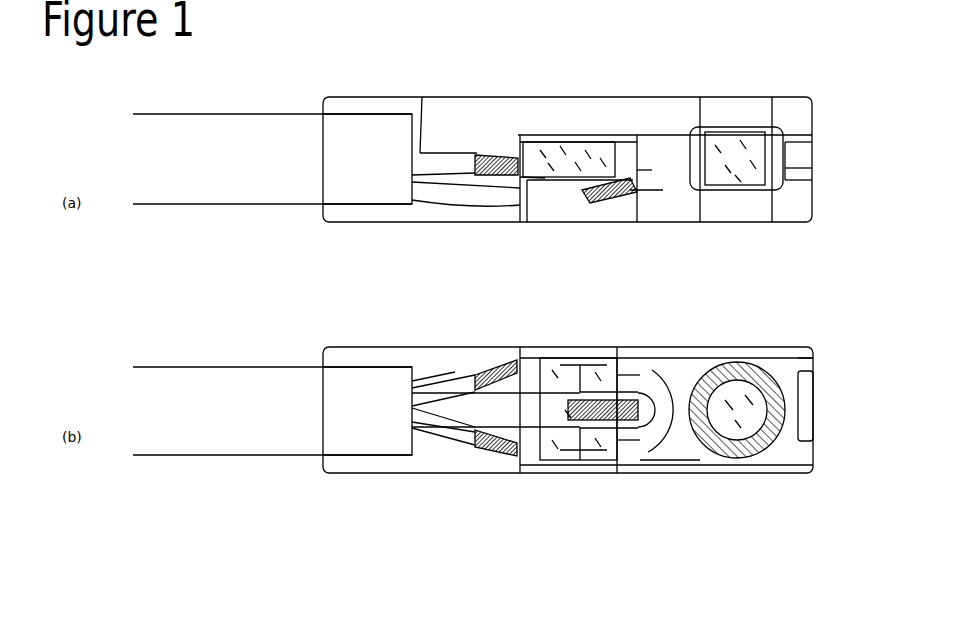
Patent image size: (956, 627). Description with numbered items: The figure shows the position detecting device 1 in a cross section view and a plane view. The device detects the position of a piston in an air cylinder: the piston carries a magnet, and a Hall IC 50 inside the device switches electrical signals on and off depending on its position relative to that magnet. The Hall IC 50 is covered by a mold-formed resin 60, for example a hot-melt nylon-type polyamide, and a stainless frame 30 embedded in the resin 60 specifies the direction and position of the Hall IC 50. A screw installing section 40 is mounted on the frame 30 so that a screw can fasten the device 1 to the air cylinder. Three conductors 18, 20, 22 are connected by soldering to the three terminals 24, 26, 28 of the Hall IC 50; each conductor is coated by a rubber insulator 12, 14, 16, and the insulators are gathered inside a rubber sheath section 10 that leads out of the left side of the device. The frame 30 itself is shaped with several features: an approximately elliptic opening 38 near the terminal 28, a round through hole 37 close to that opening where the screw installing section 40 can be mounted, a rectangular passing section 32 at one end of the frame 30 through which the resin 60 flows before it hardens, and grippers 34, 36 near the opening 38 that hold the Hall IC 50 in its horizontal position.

The position detecting device 1 is at (797, 72).
The rubber sheath section 10 is at (230, 206).
The rubber insulator 12 is at (423, 97).
The rubber insulator 14 is at (452, 384).
The rubber insulator 16 is at (526, 196).
The conductor 18 is at (478, 155).
The conductor 20 is at (478, 377).
The conductor 22 is at (604, 200).
The terminal 24 is at (505, 155).
The terminal 26 is at (517, 360).
The terminal 28 is at (637, 222).
The stainless frame 30 is at (665, 135).
The rectangular passing section 32 is at (812, 136).
The gripper 34 is at (650, 188).
The gripper 36 is at (625, 371).
The round through hole 37 is at (813, 348).
The approximately elliptic opening 38 is at (675, 465).
The screw installing section 40 is at (812, 180).
The Hall IC 50 is at (518, 137).
The resin 60 is at (360, 97).